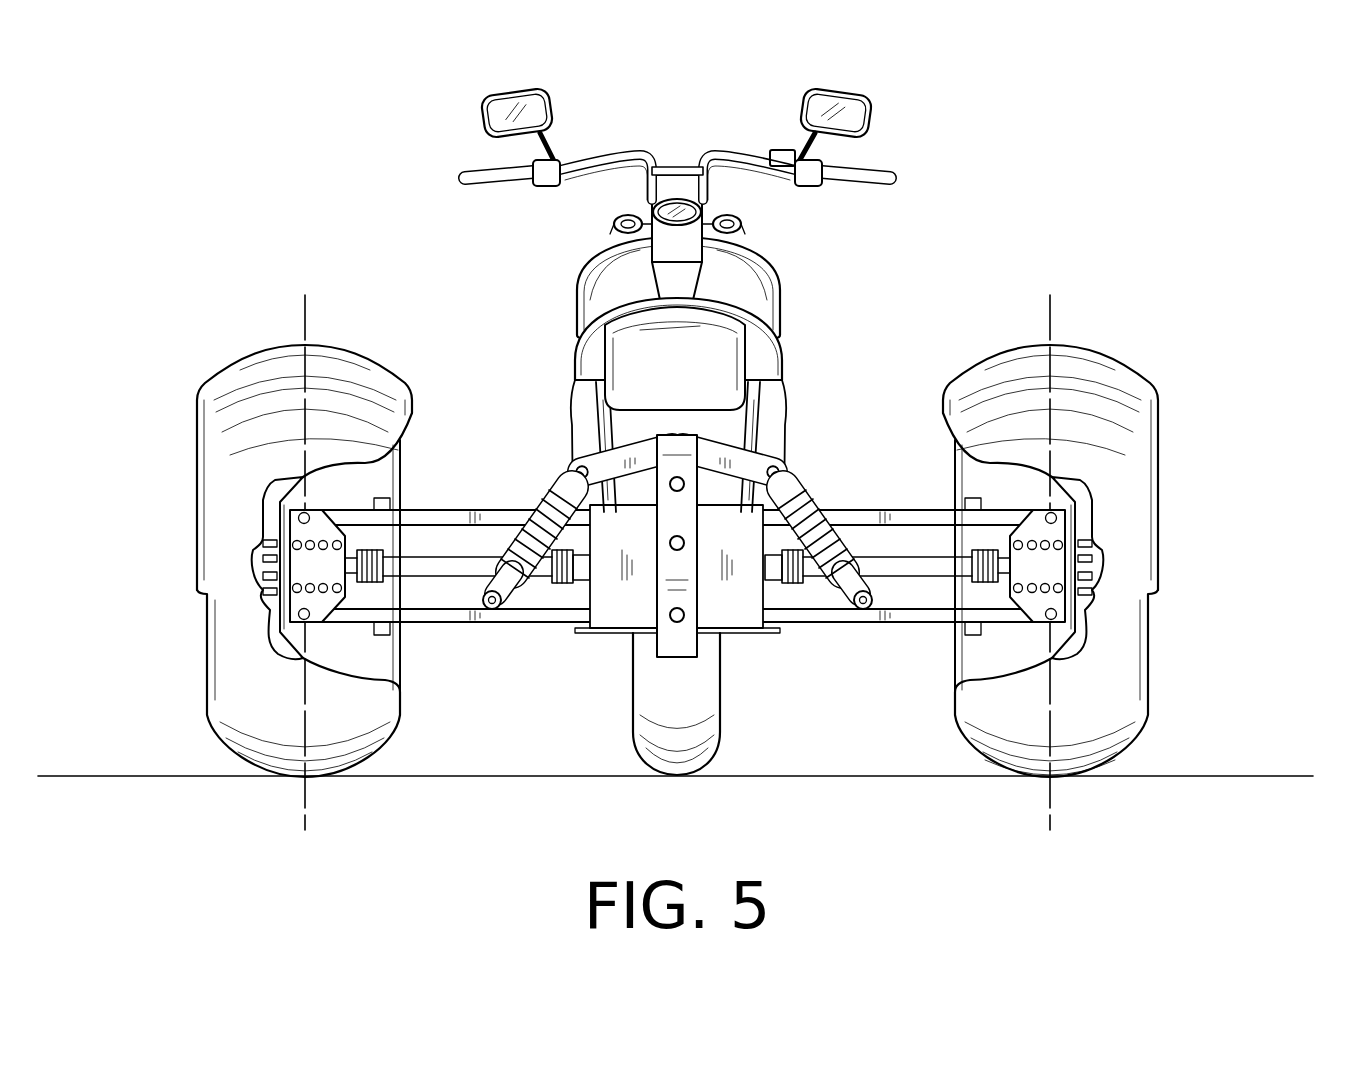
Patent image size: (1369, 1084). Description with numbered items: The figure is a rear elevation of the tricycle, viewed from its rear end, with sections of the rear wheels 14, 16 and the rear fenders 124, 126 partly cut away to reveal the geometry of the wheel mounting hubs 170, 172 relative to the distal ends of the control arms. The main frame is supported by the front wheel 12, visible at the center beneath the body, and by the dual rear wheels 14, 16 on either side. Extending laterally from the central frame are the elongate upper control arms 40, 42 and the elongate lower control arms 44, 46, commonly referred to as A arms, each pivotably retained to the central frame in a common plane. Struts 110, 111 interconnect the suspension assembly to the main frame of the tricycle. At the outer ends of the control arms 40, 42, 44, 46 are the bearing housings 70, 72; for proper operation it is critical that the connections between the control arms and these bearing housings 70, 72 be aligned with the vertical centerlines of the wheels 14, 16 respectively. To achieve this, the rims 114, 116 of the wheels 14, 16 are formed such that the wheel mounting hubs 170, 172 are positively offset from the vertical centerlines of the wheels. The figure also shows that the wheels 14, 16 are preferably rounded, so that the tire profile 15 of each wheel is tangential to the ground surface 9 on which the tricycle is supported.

The ground surface 9 is at (1265, 776).
The front wheel 12 is at (720, 710).
The rear wheel 14 is at (232, 680).
The tire profile 15 is at (1125, 750).
The rear wheel 16 is at (1113, 657).
The upper control arm 40 is at (452, 510).
The upper control arm 42 is at (910, 510).
The lower control arm 44 is at (453, 623).
The lower control arm 46 is at (843, 623).
The bearing housing 70 is at (295, 562).
The bearing housing 72 is at (1060, 552).
The strut 110 is at (765, 425).
The strut 111 is at (592, 425).
The rim 114 is at (270, 520).
The rim 116 is at (1090, 487).
The rear fender 124 is at (265, 375).
The rear fender 126 is at (1092, 376).
The wheel mounting hub 170 is at (252, 587).
The wheel mounting hub 172 is at (1100, 578).